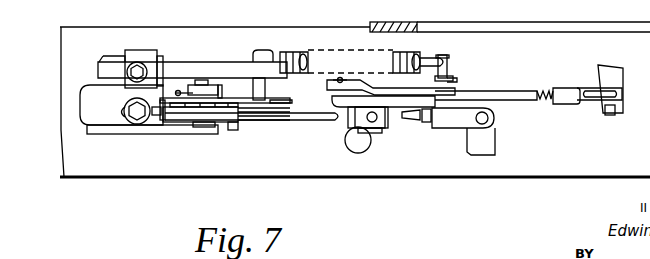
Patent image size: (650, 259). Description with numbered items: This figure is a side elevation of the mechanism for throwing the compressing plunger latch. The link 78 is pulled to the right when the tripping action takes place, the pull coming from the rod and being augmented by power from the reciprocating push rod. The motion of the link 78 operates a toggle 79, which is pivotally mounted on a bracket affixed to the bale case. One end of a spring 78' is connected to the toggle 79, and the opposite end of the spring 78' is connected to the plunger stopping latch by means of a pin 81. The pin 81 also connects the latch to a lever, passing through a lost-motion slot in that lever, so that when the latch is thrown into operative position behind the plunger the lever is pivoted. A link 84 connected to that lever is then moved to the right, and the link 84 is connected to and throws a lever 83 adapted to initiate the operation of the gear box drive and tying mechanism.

The link 78 is at (529, 89).
The spring 78' is at (311, 52).
The toggle 79 is at (455, 85).
The pin 81 is at (258, 87).
The lever 83 is at (484, 146).
The link 84 is at (270, 118).